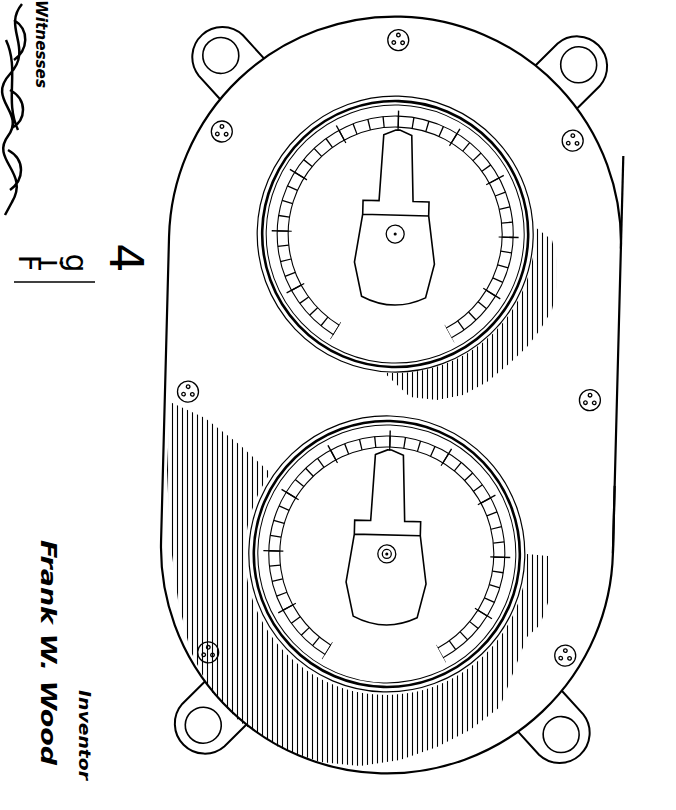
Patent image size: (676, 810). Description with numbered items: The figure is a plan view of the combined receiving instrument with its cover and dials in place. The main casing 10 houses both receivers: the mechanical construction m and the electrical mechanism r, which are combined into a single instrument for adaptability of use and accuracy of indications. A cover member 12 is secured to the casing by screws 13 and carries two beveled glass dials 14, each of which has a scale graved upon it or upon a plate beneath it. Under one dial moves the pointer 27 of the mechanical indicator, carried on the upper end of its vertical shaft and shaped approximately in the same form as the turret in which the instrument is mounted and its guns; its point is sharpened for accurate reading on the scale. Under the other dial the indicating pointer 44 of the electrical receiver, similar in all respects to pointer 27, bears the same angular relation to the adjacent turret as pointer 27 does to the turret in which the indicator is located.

The main casing 10 is at (375, 395).
The cover member 12 is at (362, 496).
The screws 13 is at (232, 133).
The beveled glass dials 14 is at (513, 308).
The pointer 27 is at (387, 537).
The indicating pointer 44 is at (395, 217).
The electrical mechanism r is at (632, 202).
The mechanical construction m is at (628, 522).